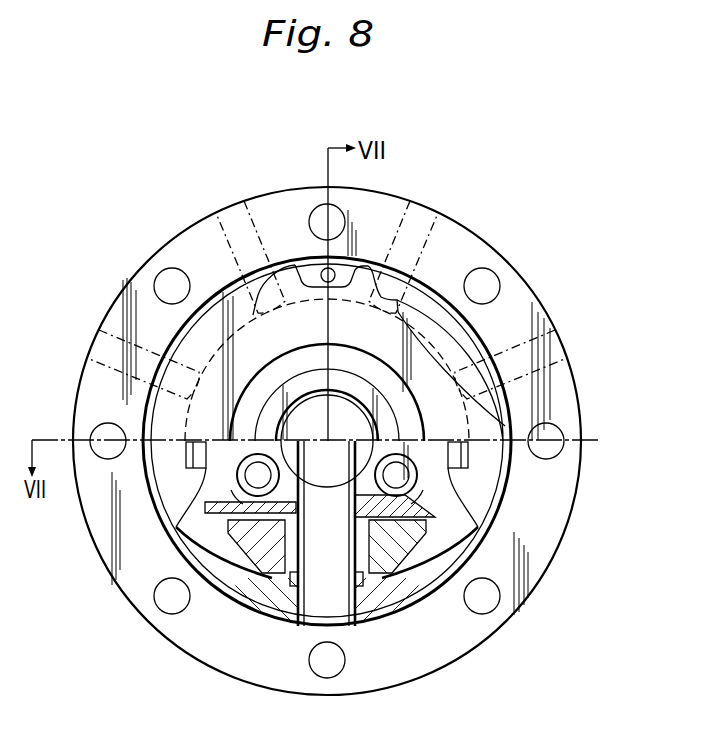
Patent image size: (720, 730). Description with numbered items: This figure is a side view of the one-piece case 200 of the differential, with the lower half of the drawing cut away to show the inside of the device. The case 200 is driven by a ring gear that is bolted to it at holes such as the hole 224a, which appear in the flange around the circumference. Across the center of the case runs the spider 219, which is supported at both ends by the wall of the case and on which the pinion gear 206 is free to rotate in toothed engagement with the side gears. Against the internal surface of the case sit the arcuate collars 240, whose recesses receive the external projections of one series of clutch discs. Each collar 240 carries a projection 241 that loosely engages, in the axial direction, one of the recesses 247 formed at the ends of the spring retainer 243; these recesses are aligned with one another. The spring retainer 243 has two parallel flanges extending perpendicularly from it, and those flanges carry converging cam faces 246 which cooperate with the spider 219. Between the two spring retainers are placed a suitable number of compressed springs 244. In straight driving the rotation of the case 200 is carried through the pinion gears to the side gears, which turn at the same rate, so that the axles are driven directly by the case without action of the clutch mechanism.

The case 200 is at (578, 367).
The hole 224a is at (488, 279).
The spider 219 is at (346, 537).
The projection 241 is at (186, 453).
The recess 247 is at (212, 492).
The compressed spring 244 is at (230, 497).
The spring retainer 243 is at (210, 512).
The arcuate collar 240 is at (208, 522).
The cam face 246 is at (266, 576).
The pinion gear 206 is at (372, 610).